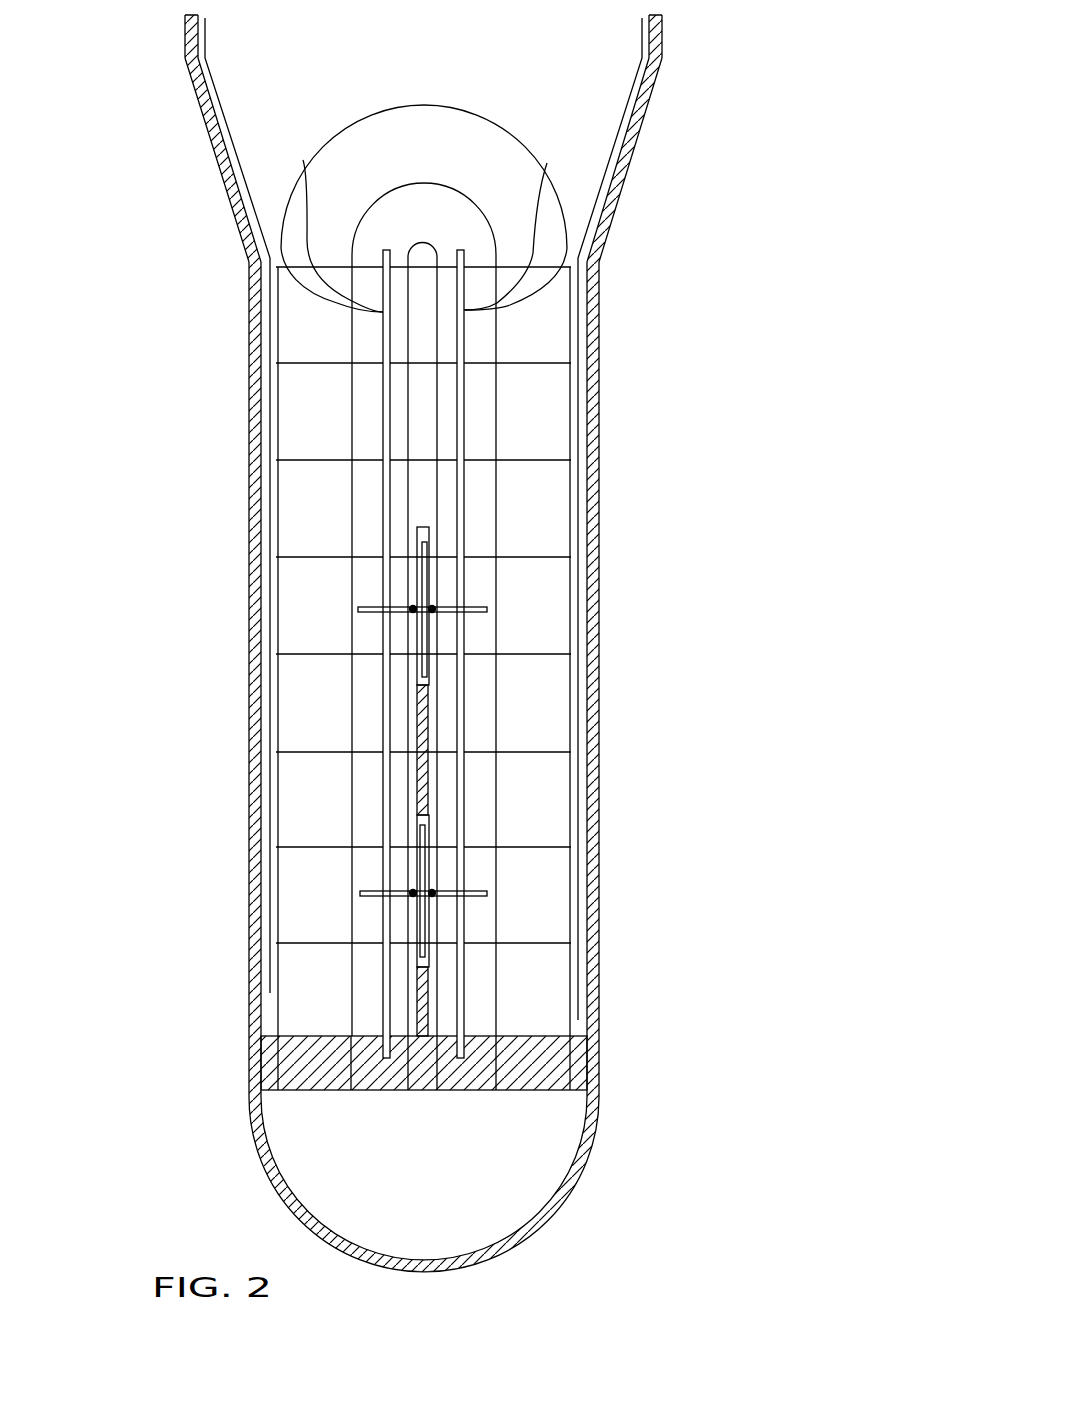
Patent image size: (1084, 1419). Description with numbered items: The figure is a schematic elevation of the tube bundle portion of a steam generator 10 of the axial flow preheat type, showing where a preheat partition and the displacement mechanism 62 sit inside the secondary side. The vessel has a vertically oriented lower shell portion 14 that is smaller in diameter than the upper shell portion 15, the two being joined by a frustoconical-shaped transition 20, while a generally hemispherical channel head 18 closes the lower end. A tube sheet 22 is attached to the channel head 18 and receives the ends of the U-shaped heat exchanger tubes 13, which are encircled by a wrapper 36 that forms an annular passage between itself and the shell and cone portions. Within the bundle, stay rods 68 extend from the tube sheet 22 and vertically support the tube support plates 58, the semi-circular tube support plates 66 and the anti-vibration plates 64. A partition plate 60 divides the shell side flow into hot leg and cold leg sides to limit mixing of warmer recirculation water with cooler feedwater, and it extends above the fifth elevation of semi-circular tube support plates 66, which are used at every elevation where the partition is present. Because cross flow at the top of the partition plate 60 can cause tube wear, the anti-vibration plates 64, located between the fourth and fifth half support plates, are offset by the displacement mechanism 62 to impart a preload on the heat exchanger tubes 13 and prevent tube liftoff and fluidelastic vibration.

The steam generator 10 is at (215, 390).
The U-shaped heat exchanger tubes 13 is at (438, 250).
The lower shell portion 14 is at (248, 852).
The upper shell portion 15 is at (663, 37).
The channel head 18 is at (567, 1182).
The frustoconical-shaped transition 20 is at (627, 173).
The tube sheet 22 is at (317, 1080).
The wrapper 36 is at (558, 363).
The tube support plates 58 is at (553, 460).
The partition plate 60 is at (430, 790).
The displacement mechanism 62 is at (427, 640).
The anti-vibration plates 64 is at (470, 607).
The semi-circular tube support plates 66 is at (518, 557).
The stay rods 68 is at (303, 160).